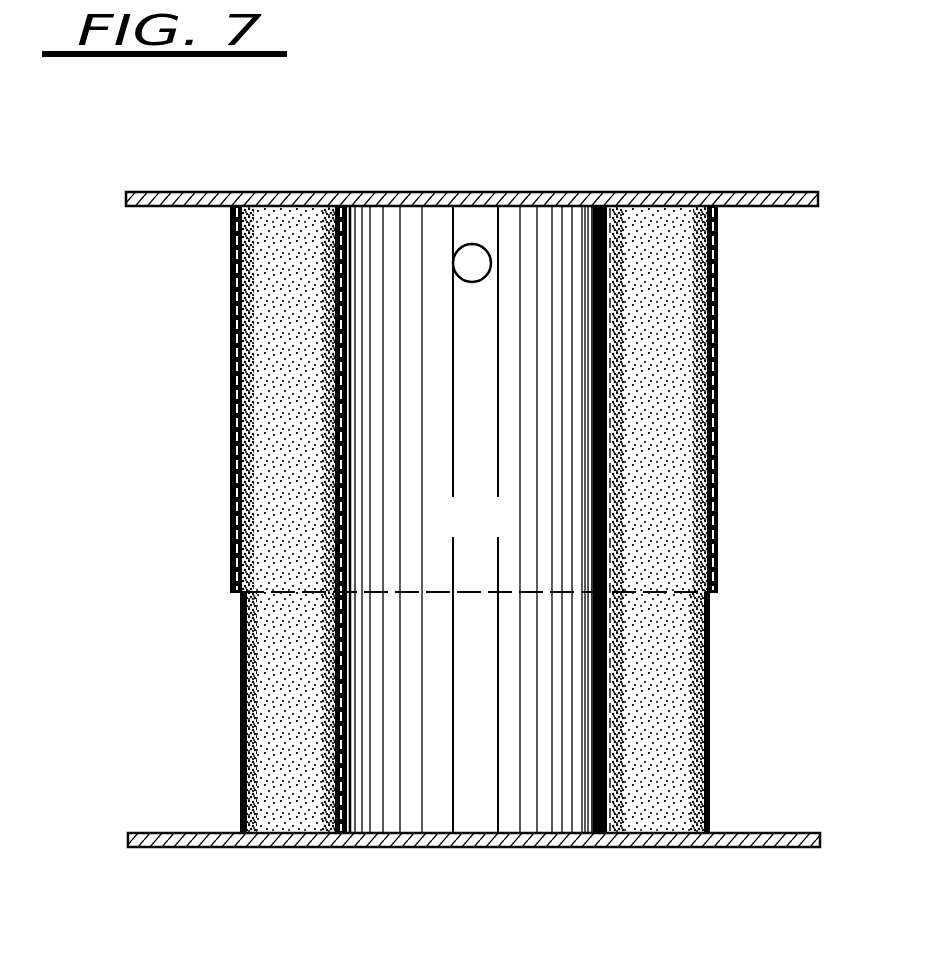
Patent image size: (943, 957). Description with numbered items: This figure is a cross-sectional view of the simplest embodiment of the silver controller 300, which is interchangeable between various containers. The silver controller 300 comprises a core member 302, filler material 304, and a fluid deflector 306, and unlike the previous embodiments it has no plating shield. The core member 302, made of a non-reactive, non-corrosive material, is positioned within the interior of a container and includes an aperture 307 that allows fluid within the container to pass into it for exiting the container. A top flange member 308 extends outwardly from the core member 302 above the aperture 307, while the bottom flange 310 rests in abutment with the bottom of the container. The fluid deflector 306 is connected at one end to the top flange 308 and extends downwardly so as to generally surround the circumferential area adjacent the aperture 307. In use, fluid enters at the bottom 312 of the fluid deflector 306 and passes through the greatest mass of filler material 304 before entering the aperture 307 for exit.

The silver controller 300 is at (262, 182).
The core member 302 is at (500, 531).
The filler material 304 is at (685, 703).
The fluid deflector 306 is at (722, 463).
The aperture 307 is at (472, 255).
The top flange member 308 is at (712, 192).
The bottom flange 310 is at (238, 848).
The bottom of the fluid deflector 312 is at (275, 595).